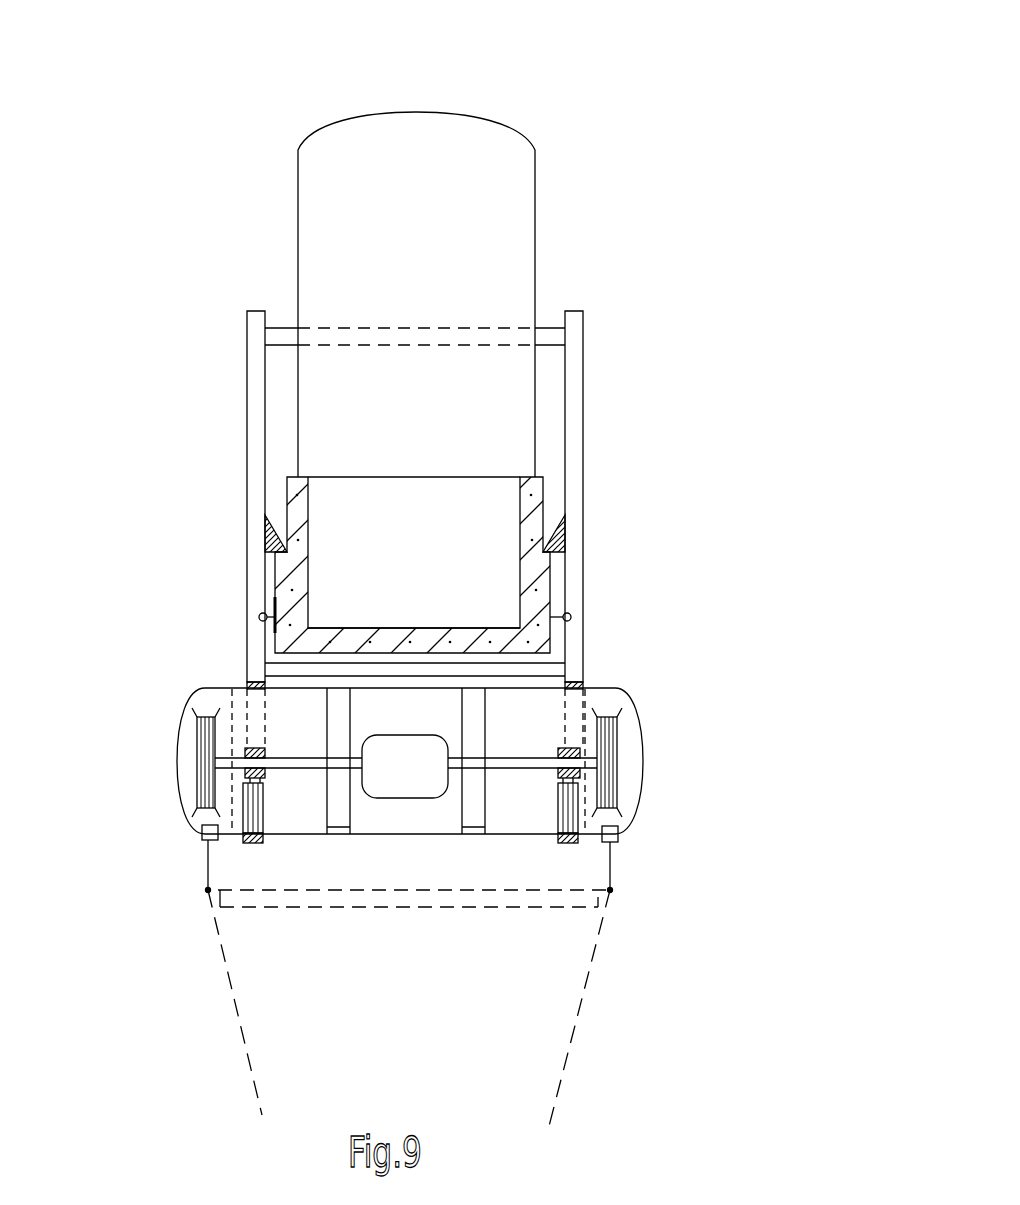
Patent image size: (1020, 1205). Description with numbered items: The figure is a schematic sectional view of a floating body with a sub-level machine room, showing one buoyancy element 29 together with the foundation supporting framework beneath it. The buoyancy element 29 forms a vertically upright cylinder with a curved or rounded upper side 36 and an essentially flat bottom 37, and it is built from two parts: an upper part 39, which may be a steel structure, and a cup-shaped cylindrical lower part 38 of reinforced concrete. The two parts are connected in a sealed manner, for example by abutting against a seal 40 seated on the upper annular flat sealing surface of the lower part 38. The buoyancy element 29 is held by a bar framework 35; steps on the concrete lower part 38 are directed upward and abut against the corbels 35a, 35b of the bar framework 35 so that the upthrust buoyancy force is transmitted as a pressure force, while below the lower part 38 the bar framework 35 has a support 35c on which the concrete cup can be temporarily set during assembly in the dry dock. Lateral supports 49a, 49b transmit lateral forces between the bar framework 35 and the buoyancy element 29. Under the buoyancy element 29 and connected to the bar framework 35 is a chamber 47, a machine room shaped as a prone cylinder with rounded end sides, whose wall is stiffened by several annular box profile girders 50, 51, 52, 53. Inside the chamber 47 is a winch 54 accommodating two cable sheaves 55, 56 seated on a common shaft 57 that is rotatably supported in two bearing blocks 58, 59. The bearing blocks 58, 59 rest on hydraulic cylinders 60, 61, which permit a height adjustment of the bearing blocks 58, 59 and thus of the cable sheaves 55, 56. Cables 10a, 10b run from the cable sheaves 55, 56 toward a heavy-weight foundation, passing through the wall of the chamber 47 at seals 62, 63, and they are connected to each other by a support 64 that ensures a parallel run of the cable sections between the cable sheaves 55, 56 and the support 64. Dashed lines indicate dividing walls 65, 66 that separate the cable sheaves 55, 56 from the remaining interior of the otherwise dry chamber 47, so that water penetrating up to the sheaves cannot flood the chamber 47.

The buoyancy element 29 is at (607, 110).
The upper side 36 is at (428, 120).
The upper part 39 is at (326, 282).
The bar framework 35 is at (578, 455).
The corbel 35a is at (270, 548).
The corbel 35b is at (560, 540).
The support 35c is at (435, 668).
The lower part 38 is at (334, 559).
The bottom 37 is at (363, 628).
The seal 40 is at (319, 469).
The lateral support 49a is at (243, 607).
The lateral support 49b is at (566, 607).
The chamber 47 is at (632, 694).
The dividing wall 65 is at (230, 705).
The dividing wall 66 is at (585, 703).
The common shaft 57 is at (295, 756).
The bearing block 58 is at (252, 747).
The bearing block 59 is at (565, 748).
The hydraulic cylinder 60 is at (255, 812).
The hydraulic cylinder 61 is at (560, 806).
The annular box profile girder 50 is at (250, 843).
The annular box profile girder 53 is at (565, 845).
The annular box profile girder 51 is at (330, 836).
The annular box profile girder 52 is at (475, 836).
The winch 54 is at (408, 815).
The cable sheave 55 is at (198, 778).
The cable sheave 56 is at (620, 758).
The seal 62 is at (201, 844).
The seal 63 is at (623, 851).
The support 64 is at (445, 898).
The cable 10a is at (228, 962).
The cable 10b is at (600, 950).